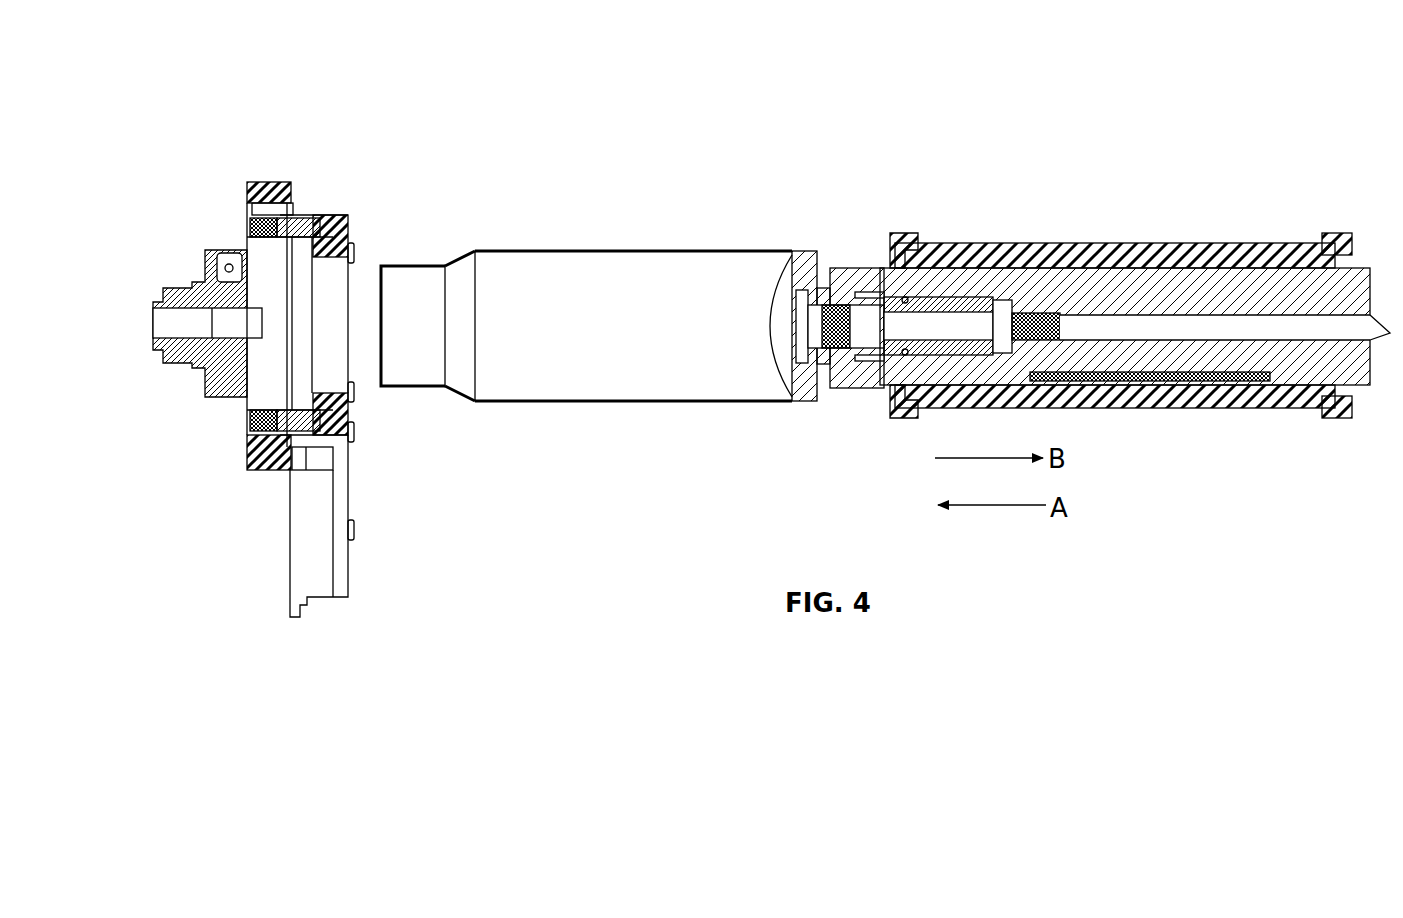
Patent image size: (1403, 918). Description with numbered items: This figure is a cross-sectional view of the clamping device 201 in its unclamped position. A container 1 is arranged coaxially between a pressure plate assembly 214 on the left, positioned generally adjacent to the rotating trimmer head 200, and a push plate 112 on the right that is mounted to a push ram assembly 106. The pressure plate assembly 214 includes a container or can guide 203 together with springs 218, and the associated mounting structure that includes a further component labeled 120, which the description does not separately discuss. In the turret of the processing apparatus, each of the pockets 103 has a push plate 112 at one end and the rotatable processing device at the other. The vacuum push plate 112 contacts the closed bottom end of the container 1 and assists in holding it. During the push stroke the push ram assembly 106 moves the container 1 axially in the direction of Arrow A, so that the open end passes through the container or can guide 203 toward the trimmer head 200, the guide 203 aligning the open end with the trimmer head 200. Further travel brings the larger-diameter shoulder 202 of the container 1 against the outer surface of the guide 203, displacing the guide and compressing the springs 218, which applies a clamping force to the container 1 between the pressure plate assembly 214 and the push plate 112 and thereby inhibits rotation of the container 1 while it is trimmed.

The container 1 is at (632, 272).
The pockets 103 is at (372, 285).
The push ram assembly 106 is at (1049, 236).
The push plate 112 is at (816, 238).
The mounting plate 120 is at (265, 600).
The trimmer head 200 is at (205, 393).
The clamping device 201 is at (203, 118).
The shoulder 202 is at (458, 398).
The container or can guide 203 is at (343, 212).
The pressure plate assembly 214 is at (232, 490).
The springs 218 is at (282, 185).